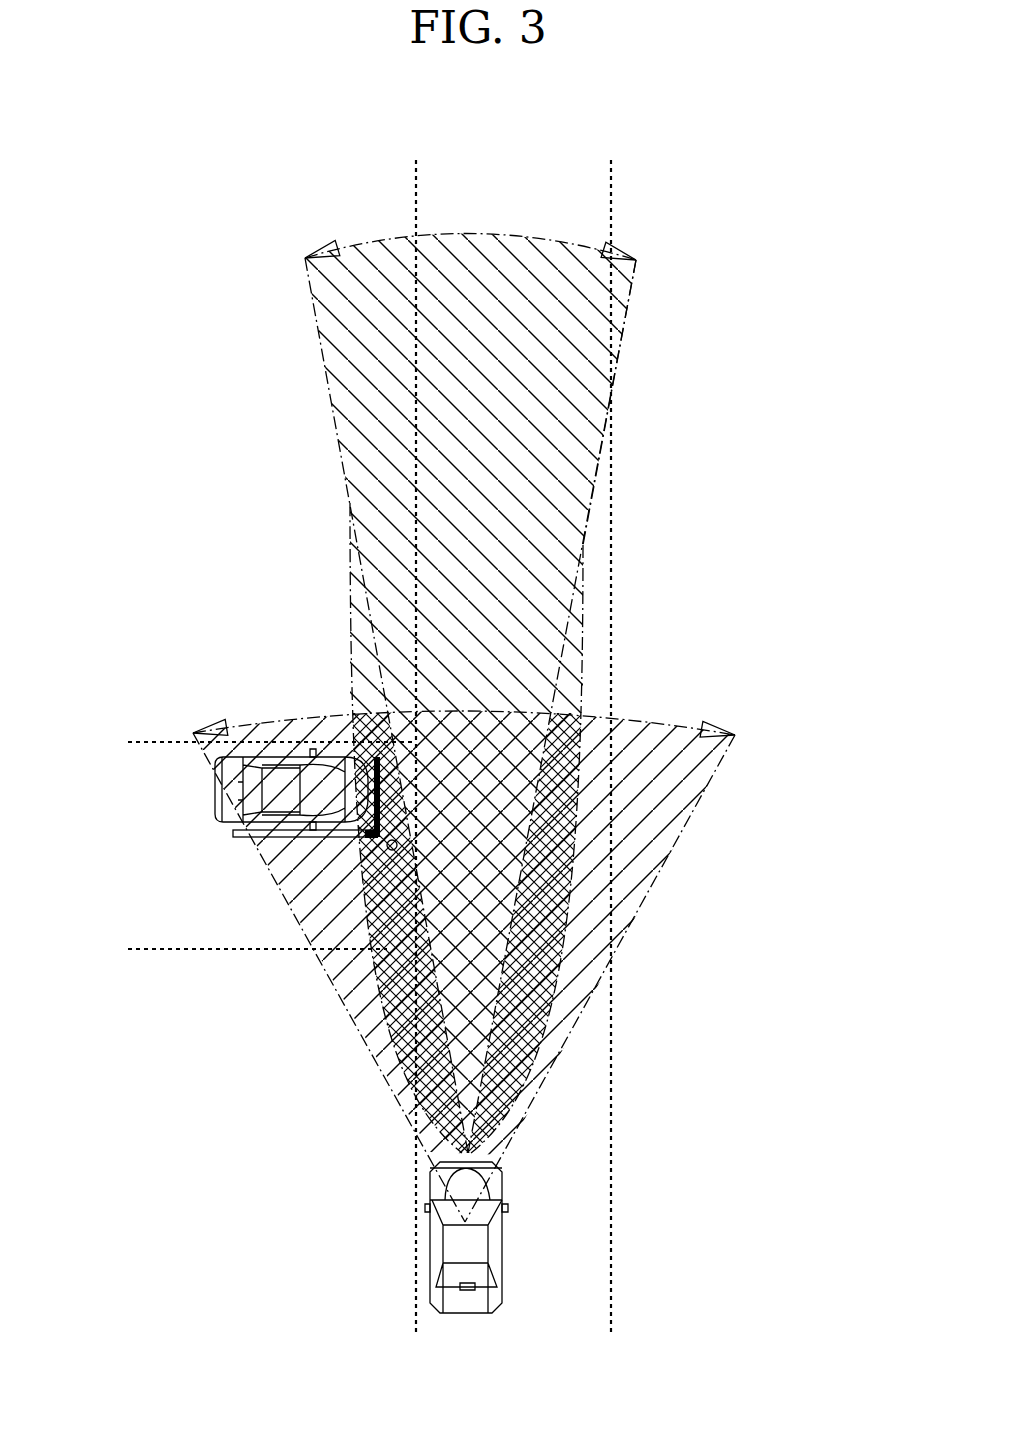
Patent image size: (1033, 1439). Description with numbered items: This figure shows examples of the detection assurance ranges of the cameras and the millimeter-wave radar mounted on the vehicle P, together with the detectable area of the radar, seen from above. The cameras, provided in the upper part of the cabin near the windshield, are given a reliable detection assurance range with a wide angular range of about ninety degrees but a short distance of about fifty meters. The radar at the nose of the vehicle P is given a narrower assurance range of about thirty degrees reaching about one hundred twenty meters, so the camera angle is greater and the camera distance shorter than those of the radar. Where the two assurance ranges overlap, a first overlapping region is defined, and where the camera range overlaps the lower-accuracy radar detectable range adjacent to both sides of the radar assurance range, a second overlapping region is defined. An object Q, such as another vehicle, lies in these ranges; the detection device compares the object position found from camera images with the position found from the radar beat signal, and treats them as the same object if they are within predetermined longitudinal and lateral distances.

The object Q is at (215, 797).
The vehicle P is at (450, 1258).